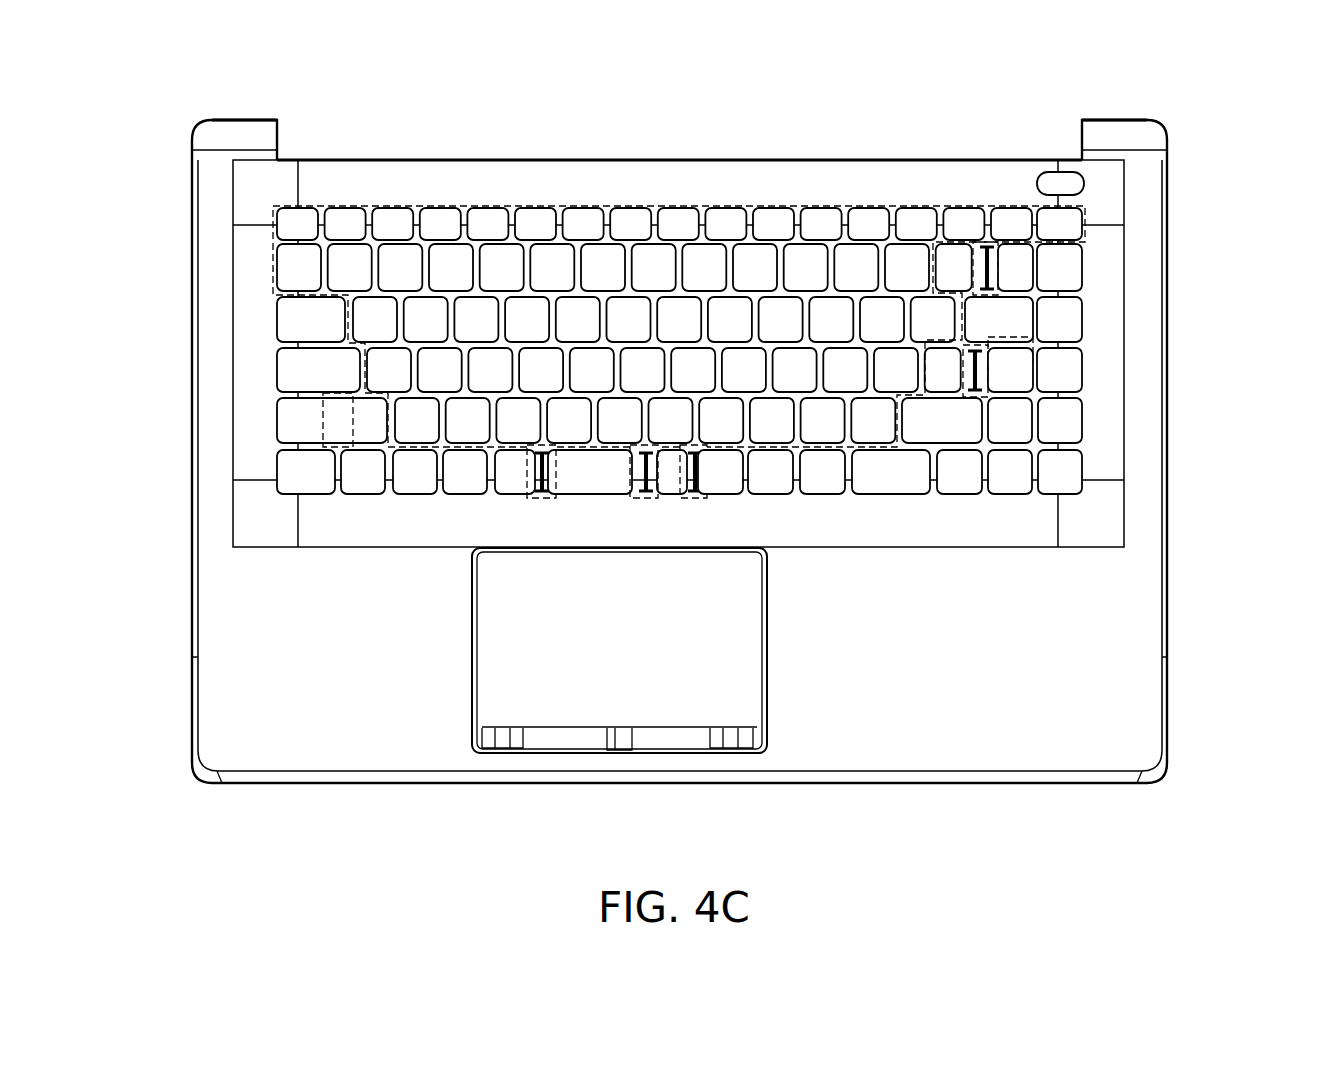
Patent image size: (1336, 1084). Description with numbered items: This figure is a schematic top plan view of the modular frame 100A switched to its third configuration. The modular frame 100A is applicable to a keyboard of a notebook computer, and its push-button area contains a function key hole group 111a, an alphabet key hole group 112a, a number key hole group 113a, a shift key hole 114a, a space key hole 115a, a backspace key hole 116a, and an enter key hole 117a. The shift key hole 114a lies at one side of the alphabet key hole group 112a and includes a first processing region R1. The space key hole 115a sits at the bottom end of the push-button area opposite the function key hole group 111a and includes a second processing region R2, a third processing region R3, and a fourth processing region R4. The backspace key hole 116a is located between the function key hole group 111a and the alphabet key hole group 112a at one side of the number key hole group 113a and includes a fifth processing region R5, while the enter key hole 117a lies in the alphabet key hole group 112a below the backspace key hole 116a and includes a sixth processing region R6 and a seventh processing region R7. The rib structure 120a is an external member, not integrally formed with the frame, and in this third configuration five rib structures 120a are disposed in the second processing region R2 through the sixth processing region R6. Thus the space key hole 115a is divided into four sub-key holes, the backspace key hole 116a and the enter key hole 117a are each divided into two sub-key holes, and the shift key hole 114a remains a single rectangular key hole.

The modular frame 100A is at (1312, 857).
The function key hole group 111a is at (680, 205).
The alphabet key hole group 112a is at (362, 371).
The number key hole group 113a is at (268, 265).
The shift key hole 114a is at (296, 411).
The space key hole 115a is at (722, 478).
The backspace key hole 116a is at (1015, 273).
The enter key hole 117a is at (1008, 376).
The rib structure 120a is at (984, 246).
The first processing region R1 is at (325, 437).
The second processing region R2 is at (542, 498).
The third processing region R3 is at (646, 498).
The fourth processing region R4 is at (695, 498).
The fifth processing region R5 is at (1000, 256).
The sixth processing region R6 is at (990, 363).
The seventh processing region R7 is at (1033, 340).